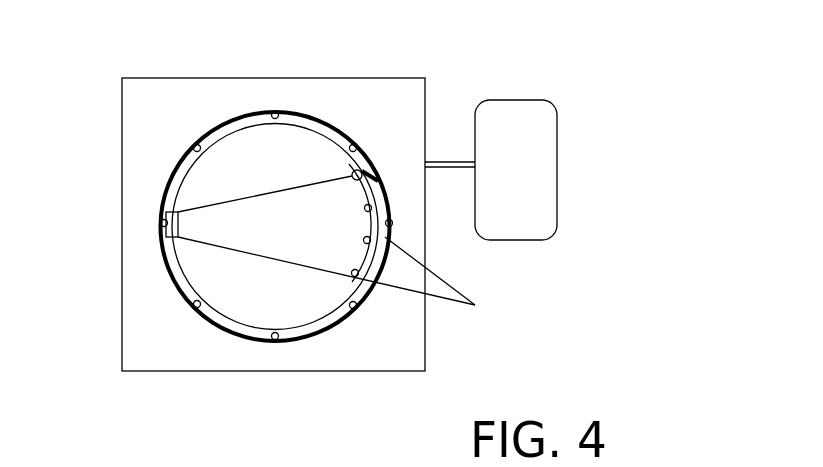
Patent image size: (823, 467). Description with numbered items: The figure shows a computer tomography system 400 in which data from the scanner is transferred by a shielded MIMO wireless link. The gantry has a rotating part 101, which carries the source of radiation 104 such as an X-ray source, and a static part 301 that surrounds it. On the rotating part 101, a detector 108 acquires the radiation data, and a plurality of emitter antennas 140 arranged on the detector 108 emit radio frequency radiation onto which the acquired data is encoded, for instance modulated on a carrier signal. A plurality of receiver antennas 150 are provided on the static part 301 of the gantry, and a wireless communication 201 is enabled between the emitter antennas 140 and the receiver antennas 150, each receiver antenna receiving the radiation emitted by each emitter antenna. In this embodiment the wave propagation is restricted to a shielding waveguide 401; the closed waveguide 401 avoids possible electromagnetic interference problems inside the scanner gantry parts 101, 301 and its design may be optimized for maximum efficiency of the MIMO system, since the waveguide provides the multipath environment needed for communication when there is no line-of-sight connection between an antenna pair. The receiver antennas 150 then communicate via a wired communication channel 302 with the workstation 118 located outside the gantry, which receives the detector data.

The gantry rotating part 101 is at (173, 183).
The source of radiation 104 is at (172, 230).
The detector 108 is at (340, 258).
The workstation 118 is at (543, 167).
The emitter antennas 140 is at (351, 177).
The receiver antennas 150 is at (273, 110).
The wireless communication 201 is at (379, 181).
The static part of the gantry 301 is at (212, 345).
The wired communication channel 302 is at (452, 157).
The computer tomography system 400 is at (595, 88).
The shielding waveguide 401 is at (182, 293).